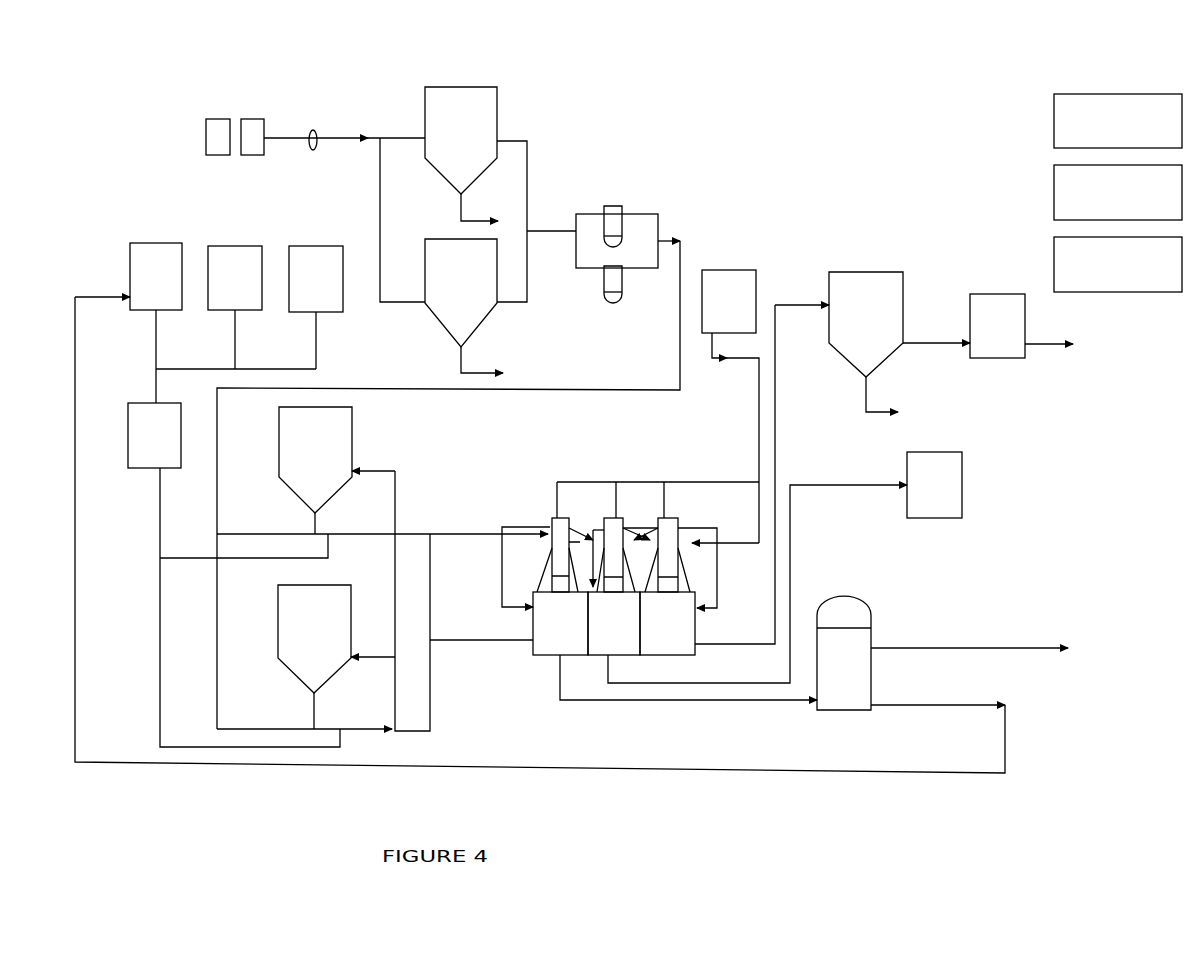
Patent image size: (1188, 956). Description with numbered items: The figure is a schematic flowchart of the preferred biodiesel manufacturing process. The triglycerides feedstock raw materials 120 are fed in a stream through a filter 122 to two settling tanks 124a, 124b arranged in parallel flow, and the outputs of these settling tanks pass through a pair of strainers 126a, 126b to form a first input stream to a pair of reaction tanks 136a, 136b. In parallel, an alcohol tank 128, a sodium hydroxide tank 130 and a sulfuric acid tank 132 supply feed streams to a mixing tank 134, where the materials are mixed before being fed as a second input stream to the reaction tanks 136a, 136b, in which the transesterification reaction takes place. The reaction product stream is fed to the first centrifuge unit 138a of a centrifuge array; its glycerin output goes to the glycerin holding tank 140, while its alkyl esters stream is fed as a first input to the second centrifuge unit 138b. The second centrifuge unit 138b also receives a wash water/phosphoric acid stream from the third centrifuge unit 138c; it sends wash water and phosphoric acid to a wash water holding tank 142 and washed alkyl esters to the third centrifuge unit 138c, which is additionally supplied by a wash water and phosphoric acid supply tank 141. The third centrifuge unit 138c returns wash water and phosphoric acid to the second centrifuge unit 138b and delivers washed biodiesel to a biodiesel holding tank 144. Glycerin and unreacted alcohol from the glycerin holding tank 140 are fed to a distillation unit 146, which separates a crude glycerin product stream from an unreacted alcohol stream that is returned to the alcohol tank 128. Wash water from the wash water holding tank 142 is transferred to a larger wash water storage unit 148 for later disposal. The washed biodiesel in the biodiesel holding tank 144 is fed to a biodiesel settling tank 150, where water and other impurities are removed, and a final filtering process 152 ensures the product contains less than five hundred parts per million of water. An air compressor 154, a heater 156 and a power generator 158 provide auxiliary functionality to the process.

The triglycerides feedstock raw materials 120 is at (235, 118).
The filter 122 is at (313, 130).
The settling tank 124a is at (471, 85).
The settling tank 124b is at (432, 322).
The strainer 126a is at (614, 205).
The strainer 126b is at (602, 288).
The alcohol tank 128 is at (156, 243).
The sodium hydroxide tank 130 is at (237, 246).
The sulfuric acid tank 132 is at (321, 246).
The mixing tank 134 is at (153, 469).
The reaction tank 136a is at (352, 427).
The reaction tank 136b is at (278, 630).
The first centrifuge unit 138a is at (550, 520).
The second centrifuge unit 138b is at (614, 522).
The third centrifuge unit 138c is at (672, 520).
The glycerin holding tank 140 is at (540, 655).
The wash water and phosphoric acid supply tank 141 is at (728, 268).
The wash water holding tank 142 is at (628, 655).
The biodiesel holding tank 144 is at (667, 655).
The distillation unit 146 is at (872, 665).
The wash water storage unit 148 is at (962, 485).
The biodiesel settling tank 150 is at (865, 271).
The final filtering process 152 is at (997, 358).
The air compressor 154 is at (1054, 119).
The heater 156 is at (1054, 193).
The power generator 158 is at (1054, 265).